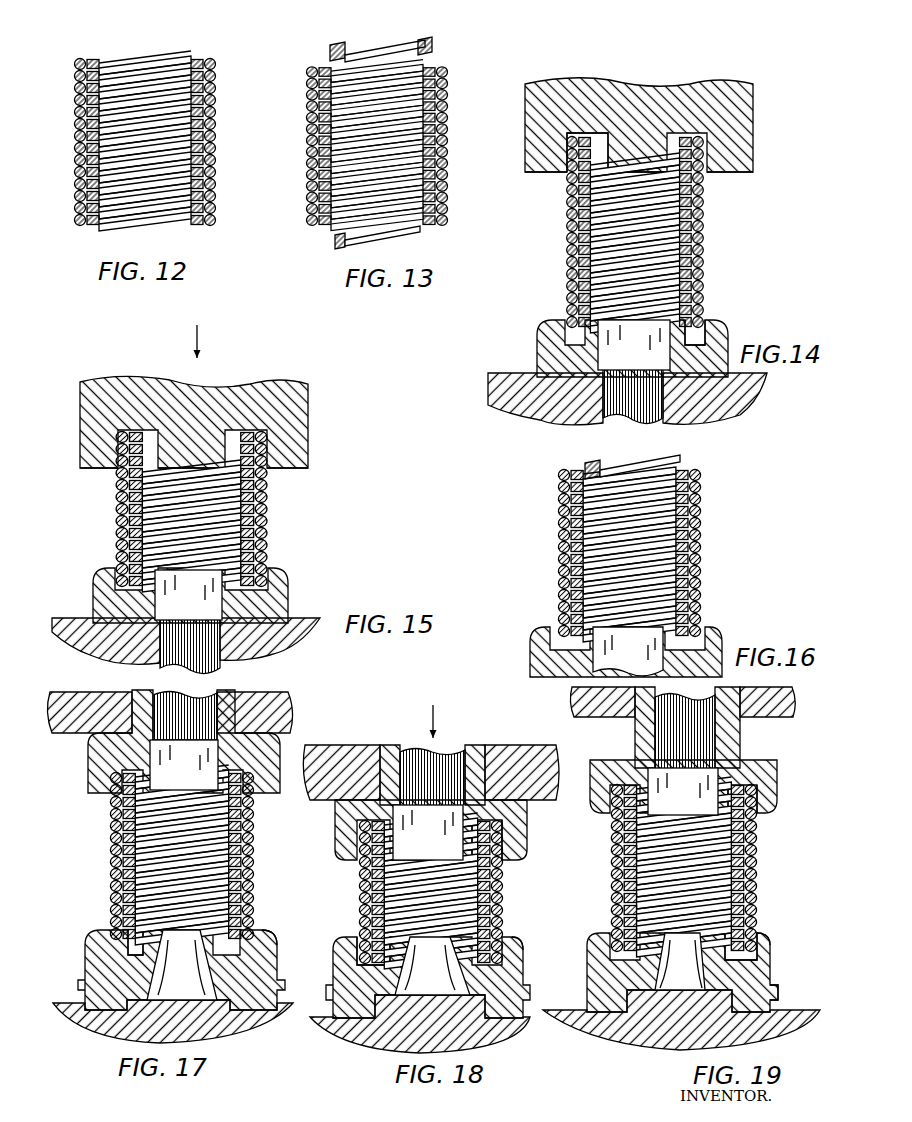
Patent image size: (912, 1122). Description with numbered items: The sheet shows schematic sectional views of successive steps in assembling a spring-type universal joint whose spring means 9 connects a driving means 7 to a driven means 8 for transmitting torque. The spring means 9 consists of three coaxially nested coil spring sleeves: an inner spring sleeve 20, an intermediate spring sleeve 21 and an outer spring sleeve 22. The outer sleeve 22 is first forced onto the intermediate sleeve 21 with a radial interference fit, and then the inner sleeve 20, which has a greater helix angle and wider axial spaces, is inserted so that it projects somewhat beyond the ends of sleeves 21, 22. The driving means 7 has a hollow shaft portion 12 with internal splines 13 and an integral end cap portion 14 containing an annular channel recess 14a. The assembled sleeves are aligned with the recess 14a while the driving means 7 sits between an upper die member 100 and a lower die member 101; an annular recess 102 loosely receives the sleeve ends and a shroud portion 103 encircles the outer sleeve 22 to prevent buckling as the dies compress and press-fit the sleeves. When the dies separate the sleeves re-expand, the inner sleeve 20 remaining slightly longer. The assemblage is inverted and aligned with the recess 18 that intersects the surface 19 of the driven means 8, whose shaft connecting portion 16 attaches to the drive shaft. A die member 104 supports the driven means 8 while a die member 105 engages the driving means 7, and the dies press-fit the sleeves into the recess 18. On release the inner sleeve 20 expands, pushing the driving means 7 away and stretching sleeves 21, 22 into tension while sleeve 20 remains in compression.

In FIG. 14, the driving means 7 is at (628, 338).
In FIG. 15, the driving means 7 is at (171, 583).
In FIG. 16, the driving means 7 is at (603, 641).
In FIG. 17, the driving means 7 is at (163, 752).
In FIG. 18, the driving means 7 is at (432, 833).
In FIG. 19, the driving means 7 is at (689, 776).
In FIG. 17, the driven means 8 is at (161, 957).
In FIG. 18, the driven means 8 is at (412, 965).
In FIG. 19, the driven means 8 is at (698, 964).
In FIG. 19, the spring means 9 is at (680, 867).
In FIG. 14, the hollow shaft portion 12 is at (658, 387).
In FIG. 15, the hollow shaft portion 12 is at (216, 630).
In FIG. 17, the hollow shaft portion 12 is at (154, 832).
In FIG. 18, the hollow shaft portion 12 is at (432, 850).
In FIG. 19, the hollow shaft portion 12 is at (685, 838).
In FIG. 14, the splined portion 13 is at (640, 420).
In FIG. 15, the splined portion 13 is at (195, 668).
In FIG. 17, the splined portion 13 is at (172, 706).
In FIG. 18, the splined portion 13 is at (440, 760).
In FIG. 19, the splined portion 13 is at (715, 728).
In FIG. 14, the end cap portion 14 is at (635, 338).
In FIG. 15, the end cap portion 14 is at (100, 570).
In FIG. 16, the end cap portion 14 is at (540, 632).
In FIG. 17, the end cap portion 14 is at (96, 790).
In FIG. 18, the end cap portion 14 is at (435, 833).
In FIG. 19, the end cap portion 14 is at (689, 789).
In FIG. 14, the channel recess 14a is at (710, 330).
In FIG. 18, the channel recess 14a is at (505, 827).
In FIG. 19, the channel recess 14a is at (762, 797).
In FIG. 17, the shaft connecting portion 16 is at (80, 998).
In FIG. 18, the shaft connecting portion 16 is at (330, 1003).
In FIG. 19, the shaft connecting portion 16 is at (774, 996).
In FIG. 17, the recess 18 is at (126, 946).
In FIG. 18, the recess 18 is at (360, 950).
In FIG. 19, the recess 18 is at (760, 954).
In FIG. 17, the surface 19 is at (275, 945).
In FIG. 18, the surface 19 is at (528, 950).
In FIG. 19, the surface 19 is at (760, 945).
In FIG. 13, the inner spring sleeve 20 is at (402, 132).
In FIG. 14, the inner spring sleeve 20 is at (653, 235).
In FIG. 15, the inner spring sleeve 20 is at (212, 512).
In FIG. 16, the inner spring sleeve 20 is at (609, 543).
In FIG. 17, the inner spring sleeve 20 is at (154, 855).
In FIG. 18, the inner spring sleeve 20 is at (402, 891).
In FIG. 19, the inner spring sleeve 20 is at (662, 867).
In FIG. 12, the intermediate spring sleeve 21 is at (167, 131).
In FIG. 13, the intermediate spring sleeve 21 is at (402, 143).
In FIG. 14, the intermediate spring sleeve 21 is at (653, 235).
In FIG. 15, the intermediate spring sleeve 21 is at (212, 512).
In FIG. 16, the intermediate spring sleeve 21 is at (609, 548).
In FIG. 17, the intermediate spring sleeve 21 is at (156, 855).
In FIG. 18, the intermediate spring sleeve 21 is at (405, 891).
In FIG. 19, the intermediate spring sleeve 21 is at (662, 867).
In FIG. 12, the outer spring sleeve 22 is at (218, 66).
In FIG. 13, the outer spring sleeve 22 is at (452, 72).
In FIG. 14, the outer spring sleeve 22 is at (700, 288).
In FIG. 15, the outer spring sleeve 22 is at (267, 498).
In FIG. 16, the outer spring sleeve 22 is at (583, 466).
In FIG. 17, the outer spring sleeve 22 is at (110, 836).
In FIG. 18, the outer spring sleeve 22 is at (355, 871).
In FIG. 19, the outer spring sleeve 22 is at (612, 851).
In FIG. 14, the upper die member 100 is at (644, 129).
In FIG. 15, the upper die member 100 is at (220, 423).
In FIG. 14, the lower die member 101 is at (758, 410).
In FIG. 15, the lower die member 101 is at (278, 650).
In FIG. 14, the annular recess 102 is at (575, 150).
In FIG. 14, the shroud portion 103 is at (753, 168).
In FIG. 15, the shroud portion 103 is at (308, 458).
In FIG. 17, the die member 104 is at (75, 1030).
In FIG. 18, the die member 104 is at (356, 1052).
In FIG. 19, the die member 104 is at (610, 1042).
In FIG. 17, the die member 105 is at (70, 700).
In FIG. 18, the die member 105 is at (318, 747).
In FIG. 19, the die member 105 is at (578, 705).